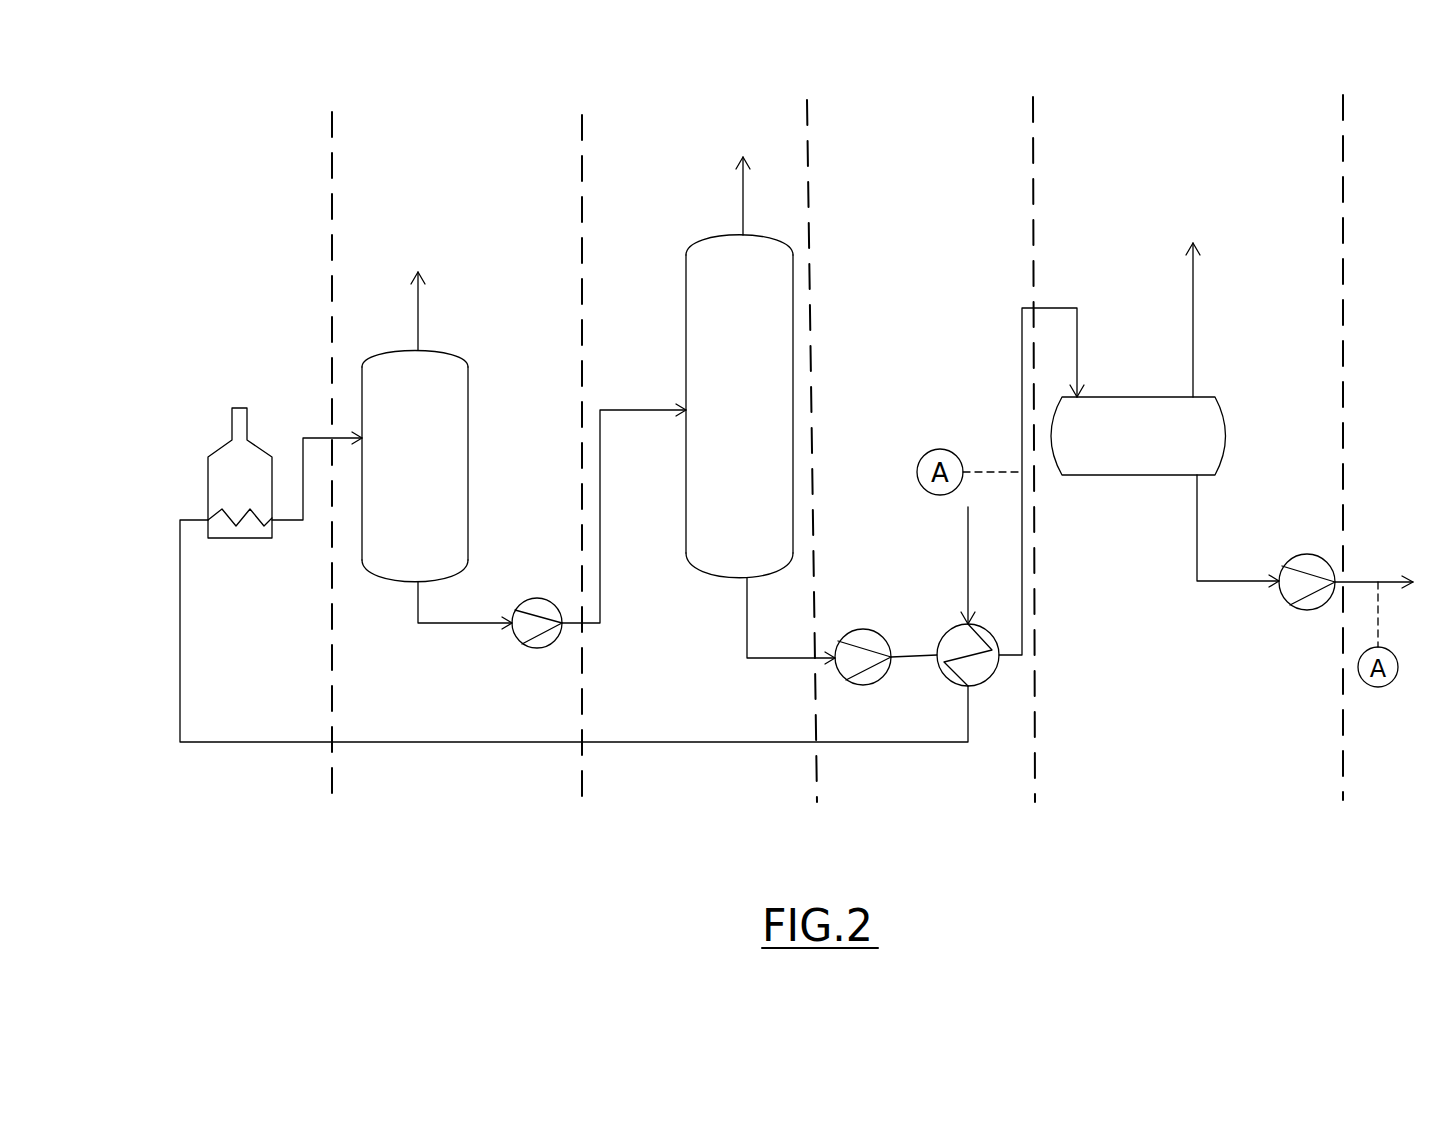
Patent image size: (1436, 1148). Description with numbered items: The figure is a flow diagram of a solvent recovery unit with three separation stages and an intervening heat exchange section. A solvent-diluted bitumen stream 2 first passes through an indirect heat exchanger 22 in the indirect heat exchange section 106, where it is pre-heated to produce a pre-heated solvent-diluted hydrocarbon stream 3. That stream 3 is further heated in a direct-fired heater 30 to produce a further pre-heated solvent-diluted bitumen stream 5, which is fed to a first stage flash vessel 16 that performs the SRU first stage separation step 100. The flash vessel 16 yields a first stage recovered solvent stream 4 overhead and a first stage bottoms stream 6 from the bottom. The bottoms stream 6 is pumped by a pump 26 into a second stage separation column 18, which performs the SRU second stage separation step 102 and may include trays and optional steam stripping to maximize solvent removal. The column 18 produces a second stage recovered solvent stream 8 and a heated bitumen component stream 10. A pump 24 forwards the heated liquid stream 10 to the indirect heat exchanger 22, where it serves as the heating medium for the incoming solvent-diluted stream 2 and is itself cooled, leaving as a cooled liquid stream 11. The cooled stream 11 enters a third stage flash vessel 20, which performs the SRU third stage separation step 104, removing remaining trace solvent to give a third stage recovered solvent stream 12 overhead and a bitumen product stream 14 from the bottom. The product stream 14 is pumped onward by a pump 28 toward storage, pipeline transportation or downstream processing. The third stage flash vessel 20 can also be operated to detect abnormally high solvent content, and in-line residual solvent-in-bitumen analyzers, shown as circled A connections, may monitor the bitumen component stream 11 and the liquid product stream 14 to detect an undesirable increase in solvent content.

The solvent-diluted bitumen stream 2 is at (966, 564).
The pre-heated solvent-diluted hydrocarbon stream 3 is at (736, 744).
The first stage recovered solvent stream 4 is at (418, 322).
The further pre-heated solvent-diluted bitumen stream 5 is at (303, 438).
The first stage bottoms stream 6 is at (450, 626).
The second stage recovered solvent stream 8 is at (745, 210).
The bitumen component stream 10 is at (745, 645).
The cooled liquid stream 11 is at (1022, 452).
The third stage recovered solvent stream 12 is at (1195, 325).
The bitumen product stream 14 is at (1196, 541).
The first stage flash vessel 16 is at (396, 485).
The second stage separation column 18 is at (724, 443).
The third stage flash vessel 20 is at (1148, 459).
The indirect heat exchanger 22 is at (992, 680).
The pump 24 is at (878, 682).
The pump 26 is at (537, 598).
The third stage bottoms pump 28 is at (1302, 610).
The direct-fired heater 30 is at (208, 492).
The SRU first stage separation step 100 is at (455, 107).
The SRU second stage separation step 102 is at (699, 107).
The SRU third stage separation step 104 is at (1165, 111).
The indirect heat exchange 106 is at (922, 109).